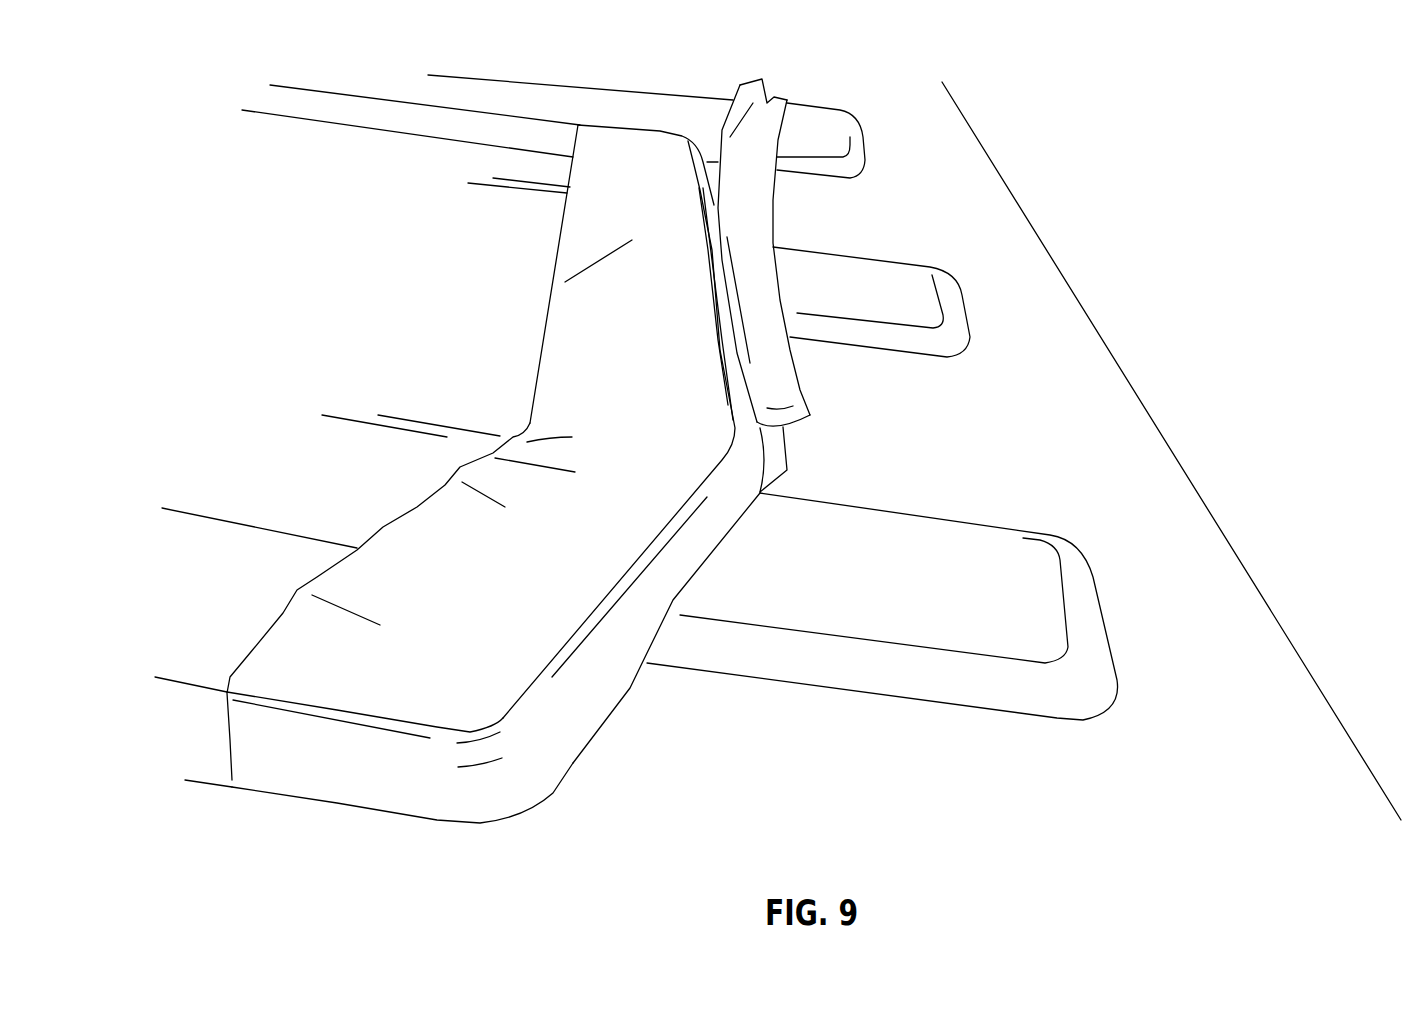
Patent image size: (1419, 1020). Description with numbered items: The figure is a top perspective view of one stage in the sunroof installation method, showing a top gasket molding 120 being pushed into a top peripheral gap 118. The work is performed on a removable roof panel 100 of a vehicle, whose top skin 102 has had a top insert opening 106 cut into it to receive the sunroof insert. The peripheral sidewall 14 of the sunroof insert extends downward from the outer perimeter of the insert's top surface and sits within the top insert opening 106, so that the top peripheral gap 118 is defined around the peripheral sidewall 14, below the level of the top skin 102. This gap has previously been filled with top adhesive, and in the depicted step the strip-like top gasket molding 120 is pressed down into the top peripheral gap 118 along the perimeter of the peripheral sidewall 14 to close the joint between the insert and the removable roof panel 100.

The peripheral sidewall 14 is at (357, 770).
The removable roof panel 100 is at (703, 798).
The top skin 102 is at (1020, 767).
The top insert opening 106 is at (630, 688).
The top peripheral gap 118 is at (778, 467).
The top gasket molding 120 is at (790, 392).